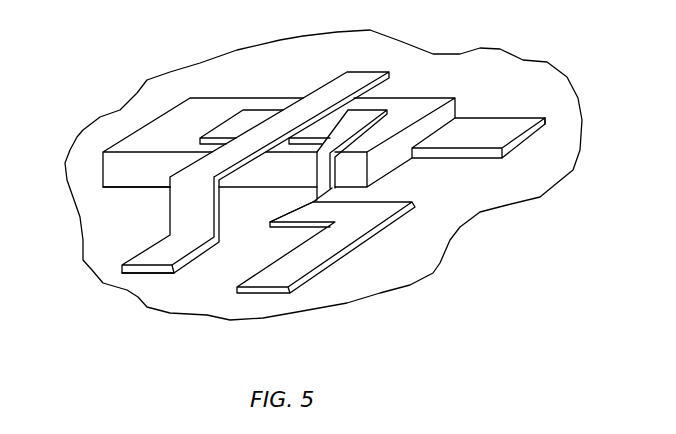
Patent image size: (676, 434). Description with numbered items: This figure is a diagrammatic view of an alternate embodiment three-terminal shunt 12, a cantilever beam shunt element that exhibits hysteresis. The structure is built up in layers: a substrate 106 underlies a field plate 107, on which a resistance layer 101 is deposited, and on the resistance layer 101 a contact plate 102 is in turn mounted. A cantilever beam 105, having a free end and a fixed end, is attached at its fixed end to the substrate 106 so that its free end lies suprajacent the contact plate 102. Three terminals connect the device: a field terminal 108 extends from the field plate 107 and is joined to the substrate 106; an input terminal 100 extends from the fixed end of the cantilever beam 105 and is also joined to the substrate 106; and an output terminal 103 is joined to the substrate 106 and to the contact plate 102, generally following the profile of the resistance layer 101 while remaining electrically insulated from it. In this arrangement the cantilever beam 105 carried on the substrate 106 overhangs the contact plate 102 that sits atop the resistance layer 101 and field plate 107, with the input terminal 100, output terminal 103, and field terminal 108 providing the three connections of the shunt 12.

The three-terminal shunt 12 is at (153, 23).
The input terminal 100 is at (136, 270).
The resistance layer 101 is at (425, 102).
The contact plate 102 is at (369, 114).
The output terminal 103 is at (263, 288).
The cantilever beam 105 is at (337, 86).
The substrate 106 is at (535, 88).
The field plate 107 is at (103, 192).
The field terminal 108 is at (565, 120).